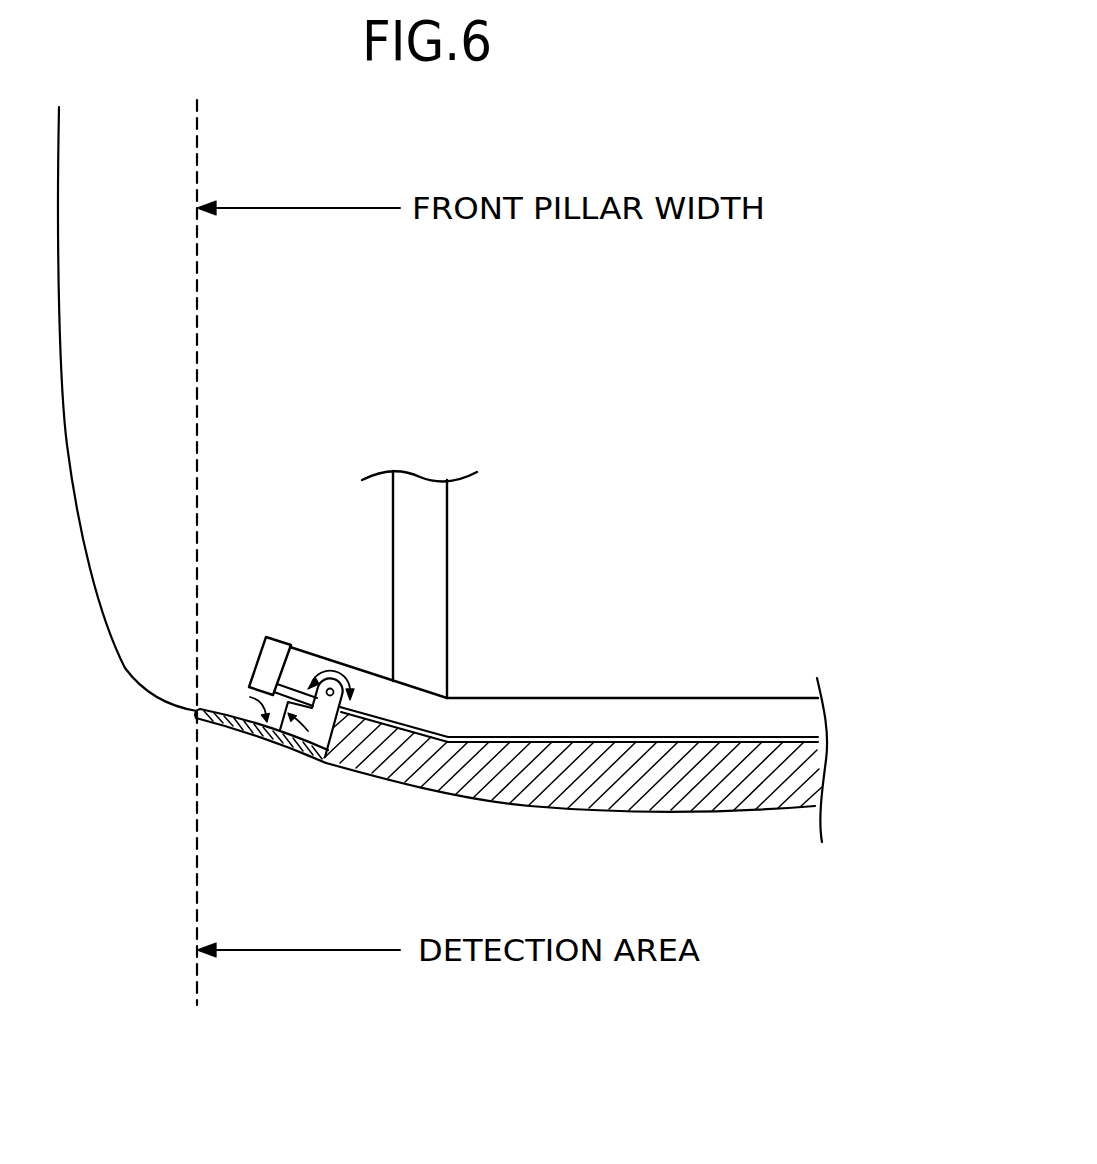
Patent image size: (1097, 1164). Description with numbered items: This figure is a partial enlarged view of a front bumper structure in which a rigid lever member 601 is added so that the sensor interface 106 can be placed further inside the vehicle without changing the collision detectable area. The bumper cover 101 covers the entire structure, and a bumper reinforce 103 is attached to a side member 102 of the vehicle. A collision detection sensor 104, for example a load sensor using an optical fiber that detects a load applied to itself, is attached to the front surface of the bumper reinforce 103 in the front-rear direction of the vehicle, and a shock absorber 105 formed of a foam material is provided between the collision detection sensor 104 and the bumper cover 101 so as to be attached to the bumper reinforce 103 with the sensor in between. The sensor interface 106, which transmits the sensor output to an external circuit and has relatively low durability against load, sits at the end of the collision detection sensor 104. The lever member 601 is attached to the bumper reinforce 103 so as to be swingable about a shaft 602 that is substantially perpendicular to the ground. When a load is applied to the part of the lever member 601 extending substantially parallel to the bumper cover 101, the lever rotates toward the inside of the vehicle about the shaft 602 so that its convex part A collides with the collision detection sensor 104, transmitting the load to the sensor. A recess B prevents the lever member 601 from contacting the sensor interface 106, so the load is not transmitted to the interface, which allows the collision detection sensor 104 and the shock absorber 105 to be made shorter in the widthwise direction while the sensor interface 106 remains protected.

The bumper cover 101 is at (533, 807).
The side member 102 is at (433, 544).
The bumper reinforce 103 is at (604, 711).
The collision detection sensor 104 is at (757, 740).
The shock absorber 105 is at (351, 764).
The sensor interface 106 is at (270, 637).
The lever member 601 is at (205, 712).
The shaft 602 is at (333, 678).
The convex part A is at (306, 732).
The recess B is at (247, 702).